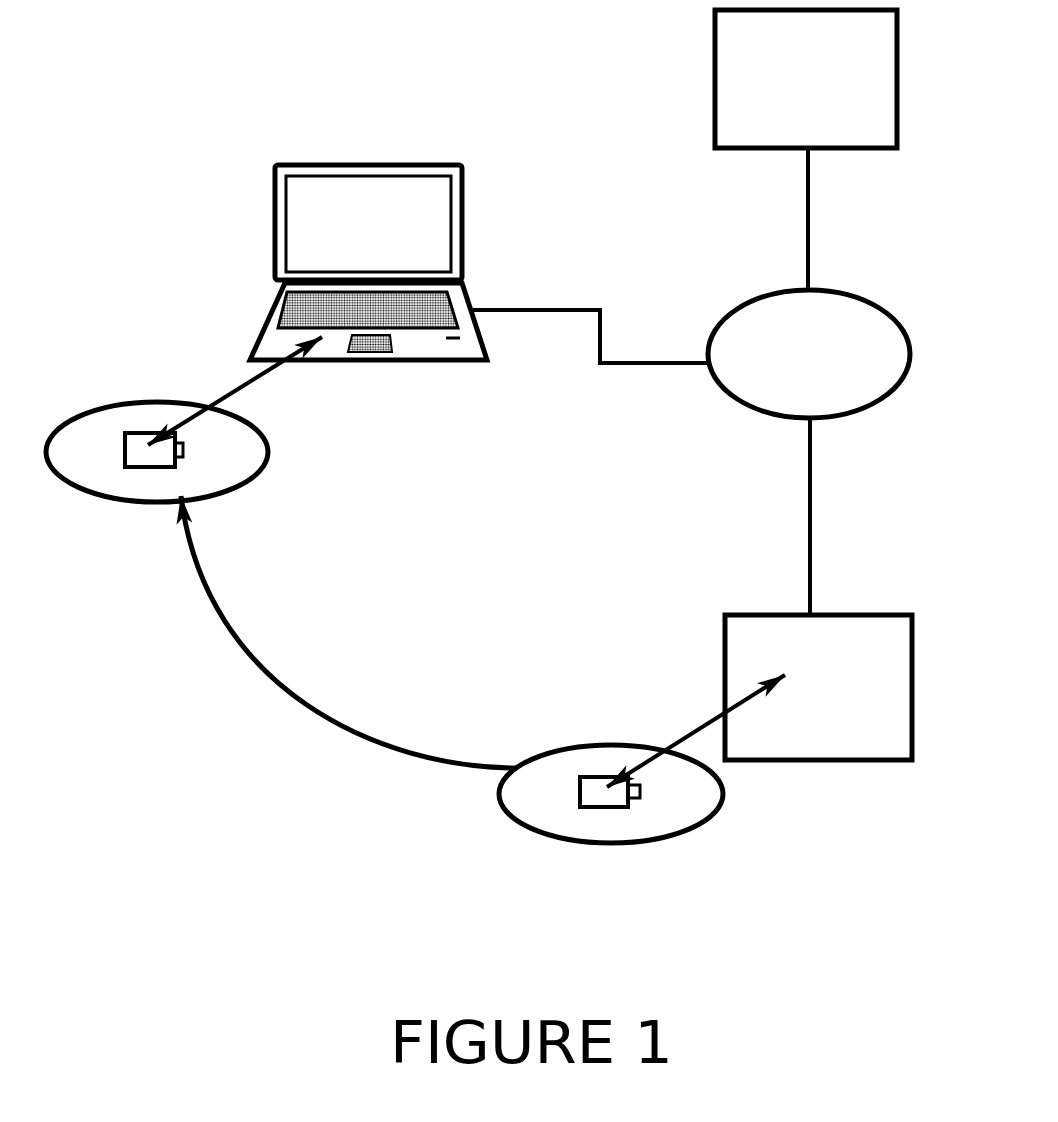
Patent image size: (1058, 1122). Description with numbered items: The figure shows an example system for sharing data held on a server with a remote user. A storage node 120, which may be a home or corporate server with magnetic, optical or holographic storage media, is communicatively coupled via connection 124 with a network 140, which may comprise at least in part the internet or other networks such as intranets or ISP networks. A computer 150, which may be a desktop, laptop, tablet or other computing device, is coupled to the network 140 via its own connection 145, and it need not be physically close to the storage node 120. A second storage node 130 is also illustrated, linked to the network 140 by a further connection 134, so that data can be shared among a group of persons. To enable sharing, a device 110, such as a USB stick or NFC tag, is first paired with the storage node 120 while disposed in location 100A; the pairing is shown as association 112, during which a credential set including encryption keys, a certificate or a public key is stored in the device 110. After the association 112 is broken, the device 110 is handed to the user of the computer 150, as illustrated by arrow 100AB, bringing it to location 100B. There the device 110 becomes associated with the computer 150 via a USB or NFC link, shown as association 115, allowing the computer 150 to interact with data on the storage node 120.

The computer 150 is at (383, 165).
The connection 145 is at (586, 309).
The storage node 130 is at (806, 79).
The communication link 134 is at (809, 230).
The network 140 is at (809, 354).
The connection 124 is at (812, 525).
The storage node 120 is at (818, 687).
The association 112 is at (692, 728).
The association 115 is at (232, 390).
The device 110 is at (137, 433).
The location 100B is at (92, 493).
The location 100A is at (510, 810).
The arrow 100AB is at (250, 672).